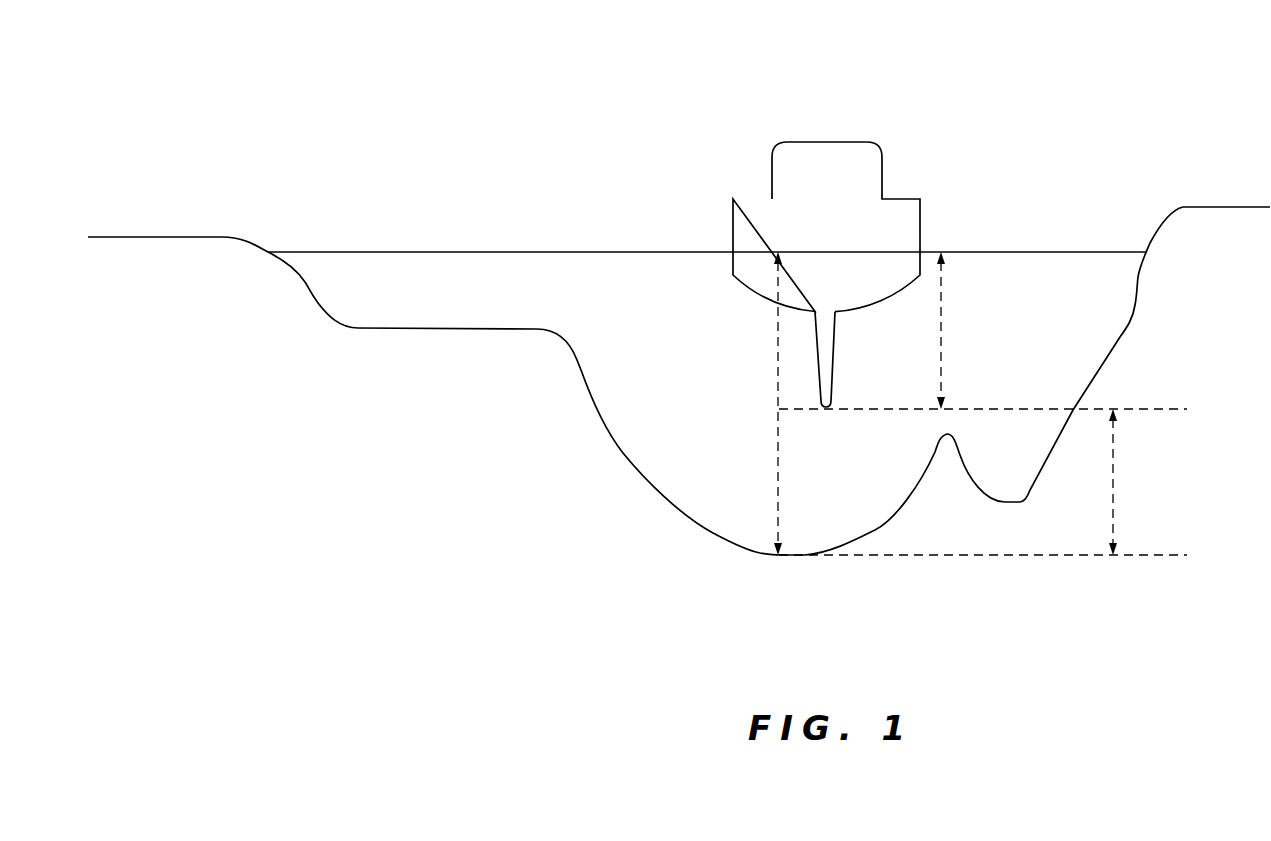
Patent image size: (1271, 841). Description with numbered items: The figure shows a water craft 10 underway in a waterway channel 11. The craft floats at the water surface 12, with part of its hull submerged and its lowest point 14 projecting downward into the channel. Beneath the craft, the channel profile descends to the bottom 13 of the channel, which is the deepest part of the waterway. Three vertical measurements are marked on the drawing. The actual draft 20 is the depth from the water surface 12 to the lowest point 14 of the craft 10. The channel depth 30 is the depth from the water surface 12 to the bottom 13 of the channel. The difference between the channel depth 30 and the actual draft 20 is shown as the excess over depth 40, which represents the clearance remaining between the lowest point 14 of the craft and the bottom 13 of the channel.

The water craft 10 is at (883, 161).
The waterway channel 11 is at (698, 193).
The water surface 12 is at (580, 251).
The bottom of the channel 13 is at (780, 555).
The lowest point of the craft 14 is at (829, 410).
The actual draft 20 is at (943, 342).
The channel depth 30 is at (775, 387).
The excess over depth 40 is at (1115, 492).